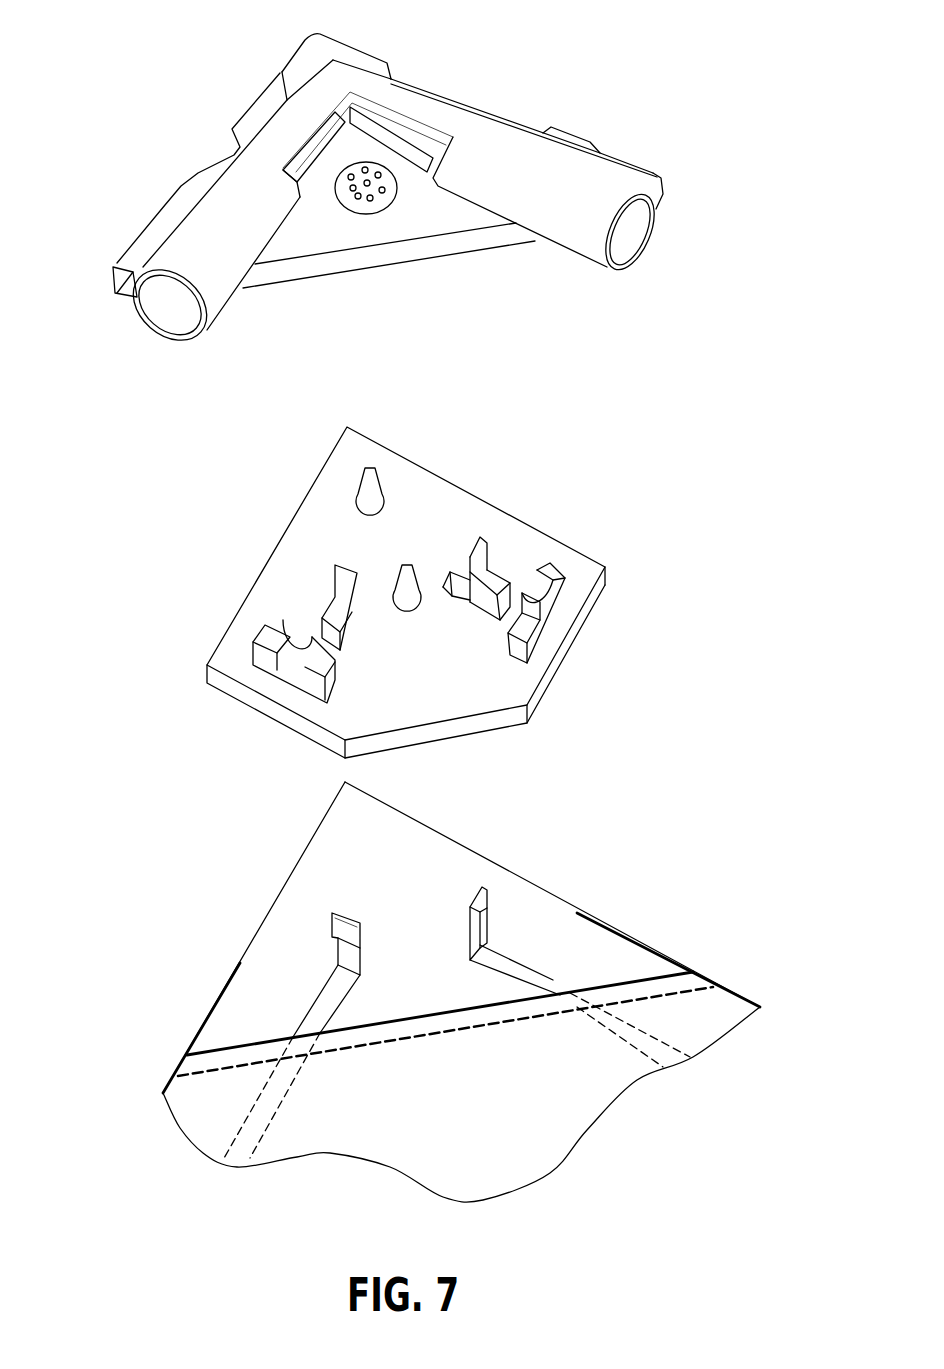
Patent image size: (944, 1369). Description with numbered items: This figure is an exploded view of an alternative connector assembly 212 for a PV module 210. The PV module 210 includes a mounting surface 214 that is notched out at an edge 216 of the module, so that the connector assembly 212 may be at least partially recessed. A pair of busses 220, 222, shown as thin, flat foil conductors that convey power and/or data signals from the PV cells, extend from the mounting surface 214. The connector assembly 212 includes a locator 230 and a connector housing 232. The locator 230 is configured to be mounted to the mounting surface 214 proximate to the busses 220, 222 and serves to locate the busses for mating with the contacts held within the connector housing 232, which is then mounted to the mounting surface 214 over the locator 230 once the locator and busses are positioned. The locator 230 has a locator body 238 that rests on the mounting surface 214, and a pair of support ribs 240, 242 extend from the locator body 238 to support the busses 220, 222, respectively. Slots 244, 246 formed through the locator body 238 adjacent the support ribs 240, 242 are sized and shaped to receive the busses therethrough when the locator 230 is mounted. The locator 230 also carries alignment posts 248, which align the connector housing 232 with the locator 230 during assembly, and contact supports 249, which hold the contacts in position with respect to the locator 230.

The PV module 210 is at (717, 877).
The connector assembly 212 is at (157, 80).
The mounting surface 214 is at (430, 865).
The edge 216 is at (243, 962).
The buss 220 is at (513, 968).
The buss 222 is at (345, 952).
The locator 230 is at (577, 570).
The connector housing 232 is at (432, 217).
The locator body 238 is at (595, 588).
The support rib 240 is at (483, 540).
The support rib 242 is at (345, 568).
The slot 244 is at (452, 580).
The slot 246 is at (372, 585).
The alignment post 248 is at (372, 470).
The contact support 249 is at (290, 672).